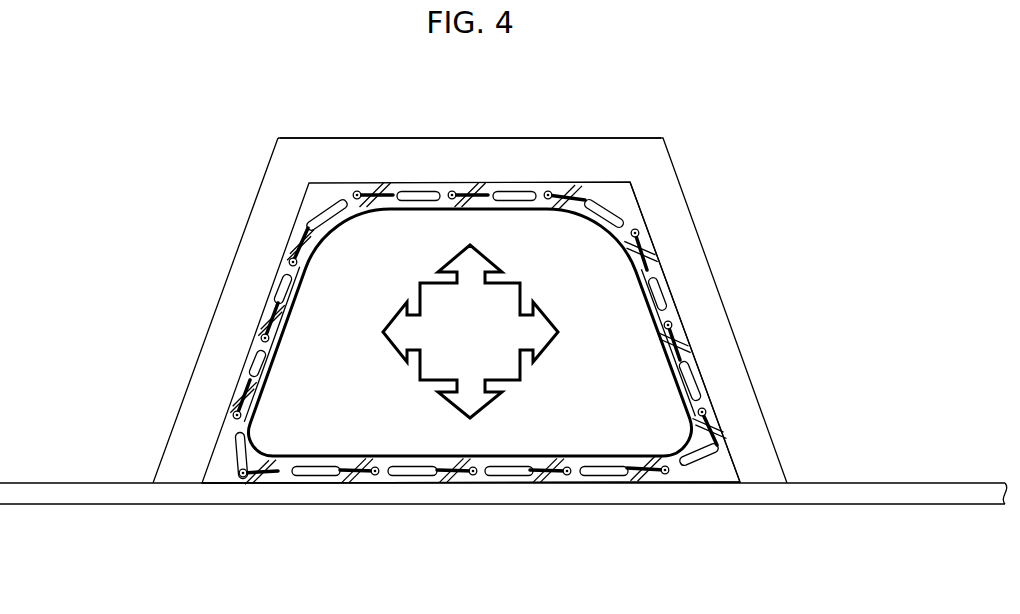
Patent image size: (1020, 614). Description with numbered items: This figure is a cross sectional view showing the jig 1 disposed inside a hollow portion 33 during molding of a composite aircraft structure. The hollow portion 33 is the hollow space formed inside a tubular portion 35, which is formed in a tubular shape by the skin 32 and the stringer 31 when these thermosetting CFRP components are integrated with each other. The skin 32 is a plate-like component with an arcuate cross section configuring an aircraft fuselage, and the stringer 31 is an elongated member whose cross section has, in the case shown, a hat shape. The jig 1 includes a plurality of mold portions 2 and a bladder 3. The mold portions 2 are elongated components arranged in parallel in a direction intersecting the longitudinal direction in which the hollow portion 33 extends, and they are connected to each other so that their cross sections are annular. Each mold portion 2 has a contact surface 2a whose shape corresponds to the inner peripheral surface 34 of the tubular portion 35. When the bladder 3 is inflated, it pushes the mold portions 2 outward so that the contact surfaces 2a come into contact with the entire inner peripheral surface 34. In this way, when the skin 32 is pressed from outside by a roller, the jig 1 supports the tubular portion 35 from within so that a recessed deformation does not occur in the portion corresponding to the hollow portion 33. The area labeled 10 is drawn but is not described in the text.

The jig 1 is at (537, 172).
The mold portions 2 is at (316, 196).
The contact surface 2a is at (347, 182).
The bladder 3 is at (603, 232).
The opening 10 is at (408, 437).
The stringer 31 is at (695, 262).
The skin 32 is at (846, 496).
The hollow portion 33 is at (697, 382).
The inner peripheral surface 34 is at (509, 478).
The tubular portion 35 is at (445, 148).